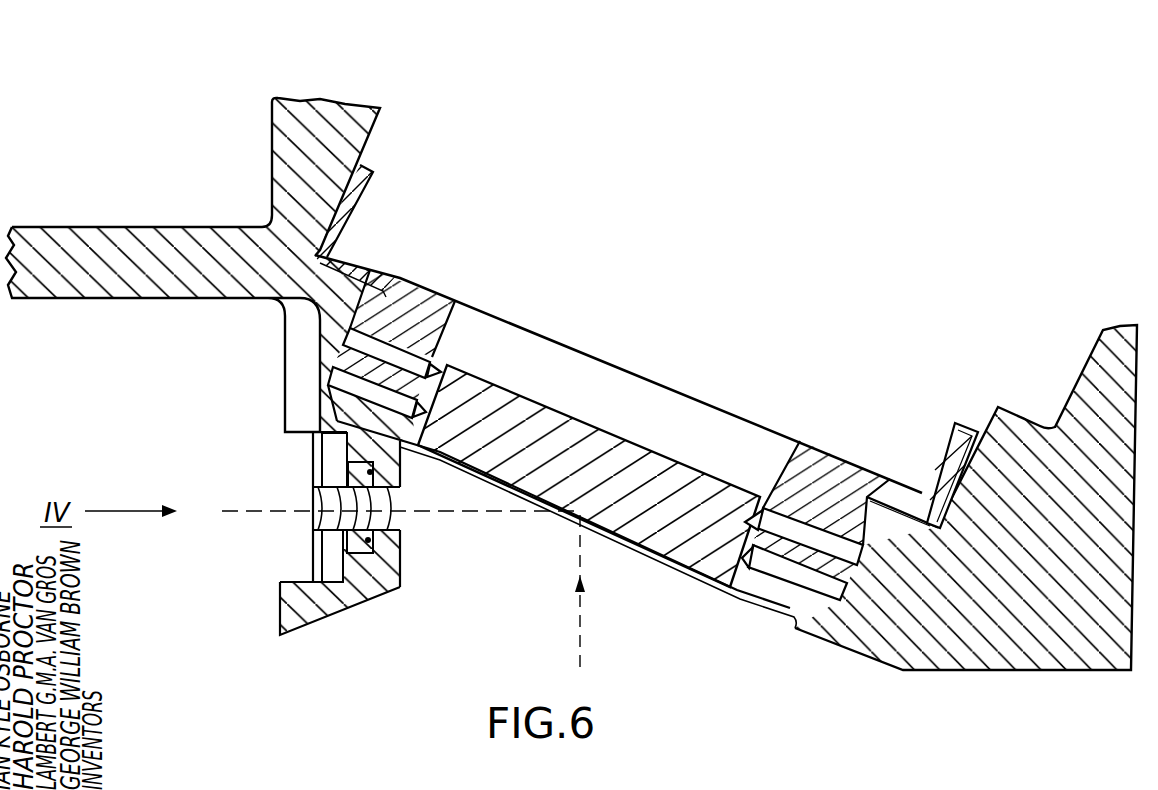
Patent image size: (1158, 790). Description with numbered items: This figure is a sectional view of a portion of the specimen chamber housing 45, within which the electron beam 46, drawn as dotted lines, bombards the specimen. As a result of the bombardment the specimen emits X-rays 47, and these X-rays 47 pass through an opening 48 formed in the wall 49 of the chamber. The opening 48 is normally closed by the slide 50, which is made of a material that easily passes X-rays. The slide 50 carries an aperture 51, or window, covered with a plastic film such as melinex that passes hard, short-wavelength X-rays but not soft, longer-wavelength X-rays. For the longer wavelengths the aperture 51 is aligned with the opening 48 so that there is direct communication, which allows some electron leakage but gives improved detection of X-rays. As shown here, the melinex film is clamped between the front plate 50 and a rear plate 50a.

The specimen chamber housing 45 is at (658, 259).
The electron beam 46 is at (582, 618).
The X-rays 47 is at (447, 511).
The opening 48 is at (317, 520).
The wall 49 is at (317, 452).
The slide 50 is at (353, 543).
The rear plate 50a is at (373, 471).
The aperture 51 is at (389, 517).